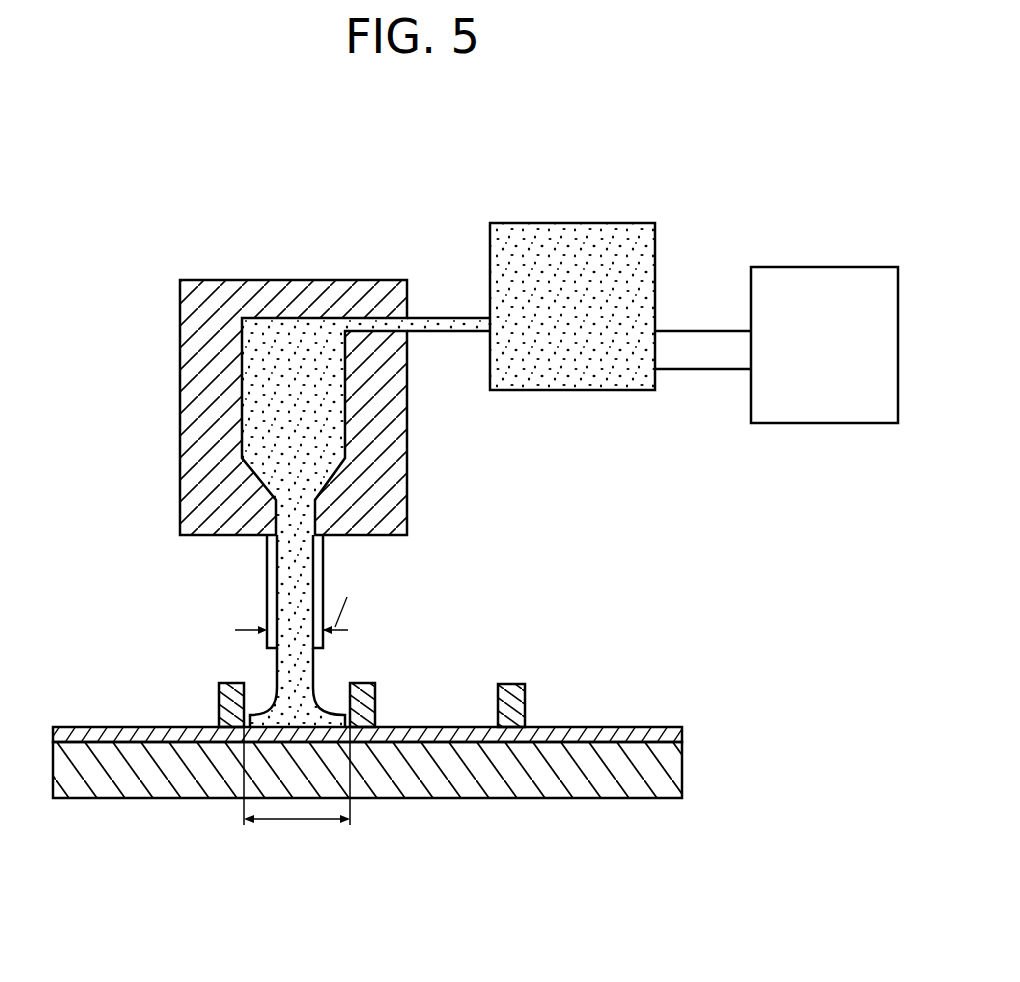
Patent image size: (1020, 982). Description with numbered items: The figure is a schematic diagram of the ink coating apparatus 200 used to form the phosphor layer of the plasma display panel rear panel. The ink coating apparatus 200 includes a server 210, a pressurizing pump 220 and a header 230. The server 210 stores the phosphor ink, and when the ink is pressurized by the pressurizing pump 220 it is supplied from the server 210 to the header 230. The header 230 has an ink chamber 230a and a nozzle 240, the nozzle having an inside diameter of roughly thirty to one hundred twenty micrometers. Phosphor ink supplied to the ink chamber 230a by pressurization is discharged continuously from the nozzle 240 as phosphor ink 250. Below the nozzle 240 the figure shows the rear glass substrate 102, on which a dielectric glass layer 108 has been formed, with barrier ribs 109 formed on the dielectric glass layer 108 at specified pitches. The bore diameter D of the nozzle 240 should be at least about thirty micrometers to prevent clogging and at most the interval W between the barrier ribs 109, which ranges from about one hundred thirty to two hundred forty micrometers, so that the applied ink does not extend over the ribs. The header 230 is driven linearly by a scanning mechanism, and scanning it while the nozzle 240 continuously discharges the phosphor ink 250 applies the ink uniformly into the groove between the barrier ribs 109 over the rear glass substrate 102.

The ink coating apparatus 200 is at (478, 411).
The server 210 is at (827, 425).
The pressurizing pump 220 is at (582, 392).
The header 230 is at (407, 508).
The ink chamber 230a is at (255, 398).
The nozzle 240 is at (265, 600).
The phosphor ink 250 is at (318, 688).
The dielectric glass layer 108 is at (680, 733).
The rear glass substrate 102 is at (683, 763).
The barrier ribs 109 is at (220, 692).